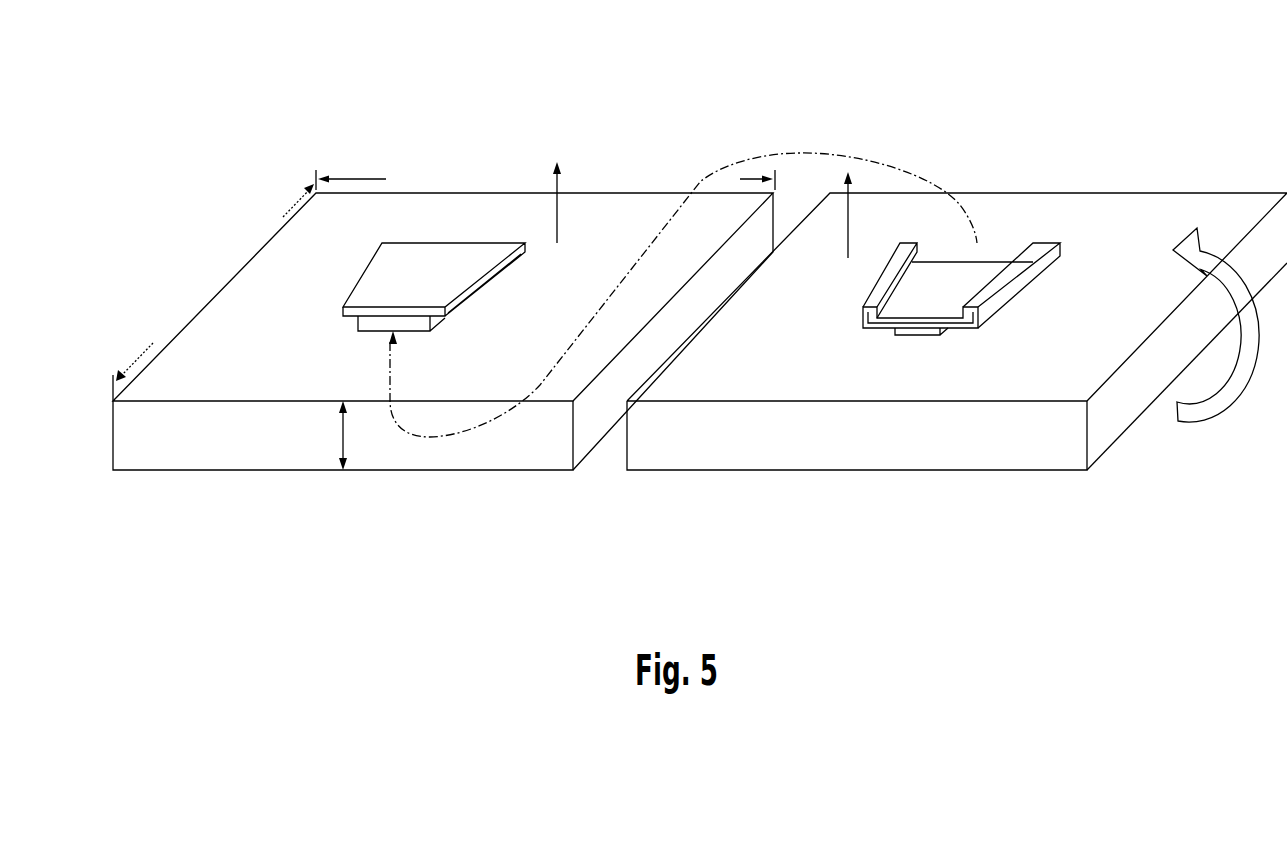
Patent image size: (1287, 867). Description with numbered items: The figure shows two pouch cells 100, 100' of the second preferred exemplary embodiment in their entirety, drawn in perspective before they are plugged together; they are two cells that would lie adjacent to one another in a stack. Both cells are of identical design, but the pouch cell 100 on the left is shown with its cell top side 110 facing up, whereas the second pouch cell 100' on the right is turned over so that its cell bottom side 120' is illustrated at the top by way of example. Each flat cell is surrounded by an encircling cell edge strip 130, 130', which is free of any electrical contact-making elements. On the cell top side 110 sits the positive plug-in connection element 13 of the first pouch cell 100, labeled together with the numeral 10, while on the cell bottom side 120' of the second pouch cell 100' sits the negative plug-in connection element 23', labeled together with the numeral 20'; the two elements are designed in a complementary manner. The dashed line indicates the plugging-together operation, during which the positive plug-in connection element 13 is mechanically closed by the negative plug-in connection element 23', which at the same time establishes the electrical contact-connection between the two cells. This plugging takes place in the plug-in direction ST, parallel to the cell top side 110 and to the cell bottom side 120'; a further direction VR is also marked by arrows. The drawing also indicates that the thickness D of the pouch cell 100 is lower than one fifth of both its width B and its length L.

The pouch cell 100 is at (443, 392).
The second pouch cell 100' is at (957, 369).
The cell top side 110 is at (255, 296).
The cell bottom side 120' is at (957, 274).
The cell edge strip 130 is at (343, 461).
The cell edge strip 130' is at (857, 461).
The component 10 is at (434, 239).
The positive plug-in connection element 13 is at (452, 226).
The negative plug-in connection element 23' is at (985, 241).
The second component 20' is at (985, 241).
The plug-in direction ST is at (893, 127).
The width B is at (529, 181).
The thickness D is at (345, 437).
The length L is at (133, 368).
The vertical direction VR is at (557, 228).